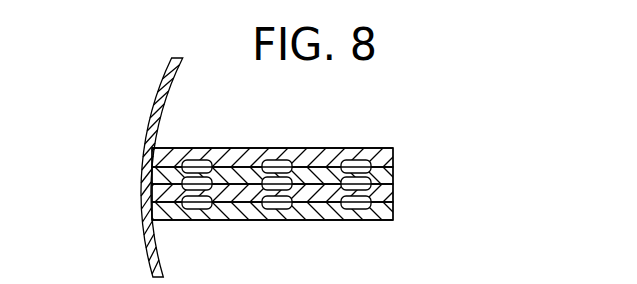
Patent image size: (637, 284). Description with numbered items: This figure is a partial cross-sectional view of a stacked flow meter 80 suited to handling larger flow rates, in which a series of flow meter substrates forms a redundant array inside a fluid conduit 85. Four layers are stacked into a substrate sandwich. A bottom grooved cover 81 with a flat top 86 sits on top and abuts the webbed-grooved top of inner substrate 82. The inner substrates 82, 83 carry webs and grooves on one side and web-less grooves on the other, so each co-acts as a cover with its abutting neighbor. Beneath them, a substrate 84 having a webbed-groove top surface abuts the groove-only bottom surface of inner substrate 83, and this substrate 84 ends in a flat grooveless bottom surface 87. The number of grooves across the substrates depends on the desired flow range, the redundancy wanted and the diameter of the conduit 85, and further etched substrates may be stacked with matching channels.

The laminated sensor strip 80 is at (331, 145).
The bottom grooved cover 81 is at (391, 156).
The inner substrate 82 is at (392, 178).
The inner substrate 83 is at (392, 195).
The substrate 84 is at (393, 214).
The conduit 85 is at (152, 96).
The flat top 86 is at (232, 147).
The flat grooveless bottom surface 87 is at (209, 221).